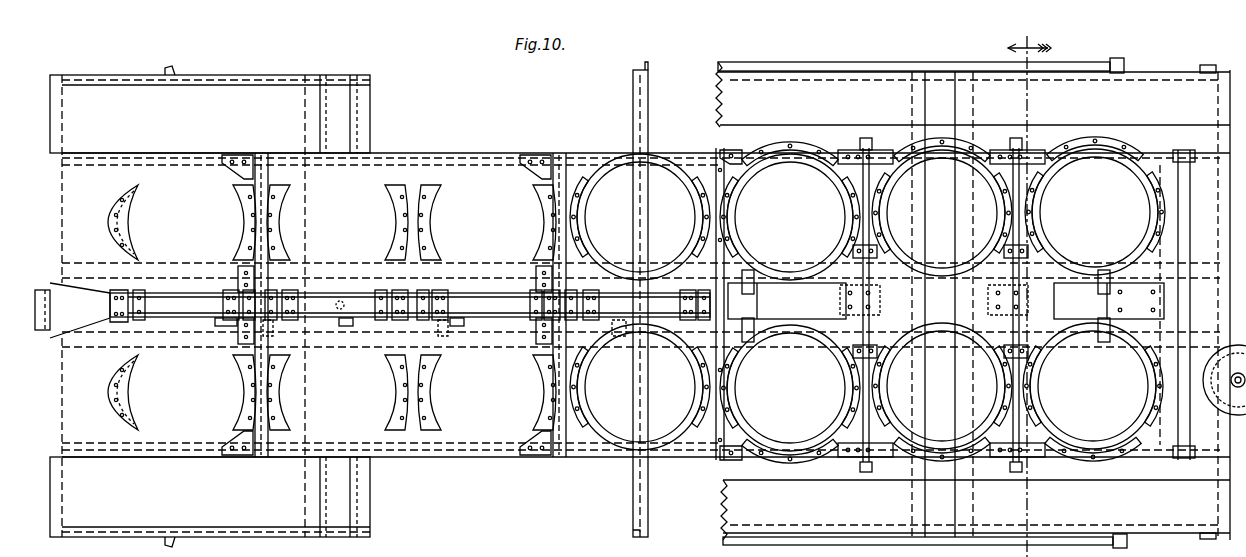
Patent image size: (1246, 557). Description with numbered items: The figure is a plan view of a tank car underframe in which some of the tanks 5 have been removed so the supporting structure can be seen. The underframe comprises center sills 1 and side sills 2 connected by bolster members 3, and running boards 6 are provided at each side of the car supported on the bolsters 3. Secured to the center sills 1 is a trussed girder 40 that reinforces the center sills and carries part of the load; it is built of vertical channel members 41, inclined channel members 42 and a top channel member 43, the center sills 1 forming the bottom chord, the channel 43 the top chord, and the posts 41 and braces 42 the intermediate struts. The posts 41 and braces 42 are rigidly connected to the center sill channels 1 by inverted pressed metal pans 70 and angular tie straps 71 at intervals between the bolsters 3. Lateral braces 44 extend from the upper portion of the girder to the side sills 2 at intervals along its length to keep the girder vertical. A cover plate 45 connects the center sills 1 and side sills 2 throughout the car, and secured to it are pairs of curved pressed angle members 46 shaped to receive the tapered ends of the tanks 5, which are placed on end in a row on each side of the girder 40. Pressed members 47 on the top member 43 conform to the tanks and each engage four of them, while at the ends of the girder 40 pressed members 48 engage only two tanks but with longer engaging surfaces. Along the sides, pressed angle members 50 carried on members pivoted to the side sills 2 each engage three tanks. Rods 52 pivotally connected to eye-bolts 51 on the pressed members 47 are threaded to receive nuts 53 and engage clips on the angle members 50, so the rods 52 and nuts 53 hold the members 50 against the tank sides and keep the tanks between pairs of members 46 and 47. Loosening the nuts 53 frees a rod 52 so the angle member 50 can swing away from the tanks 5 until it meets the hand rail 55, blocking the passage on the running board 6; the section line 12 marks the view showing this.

The center sills 1 is at (503, 272).
The side sills 2 is at (478, 153).
The bolster members 3 is at (318, 500).
The tanks 5 is at (867, 300).
The running boards 6 is at (973, 301).
The section line of Fig. 12 is at (1029, 287).
The trussed girder 40 is at (545, 295).
The vertical channel members 41 is at (113, 307).
The inclined channel members 42 is at (343, 355).
The top channel member 43 is at (764, 276).
The lateral braces 44 is at (266, 174).
The cover plate 45 is at (1158, 114).
The curved pressed angle members 46 is at (126, 220).
The pressed members 47 is at (746, 305).
The pressed members 48 is at (1150, 282).
The pressed angle members 50 is at (766, 154).
The eye-bolt 51 is at (853, 255).
The rods 52 is at (866, 147).
The nuts 53 is at (860, 150).
The hand rail 55 is at (895, 64).
The inverted pressed metal pans 70 is at (270, 338).
The angular tie straps 71 is at (346, 292).